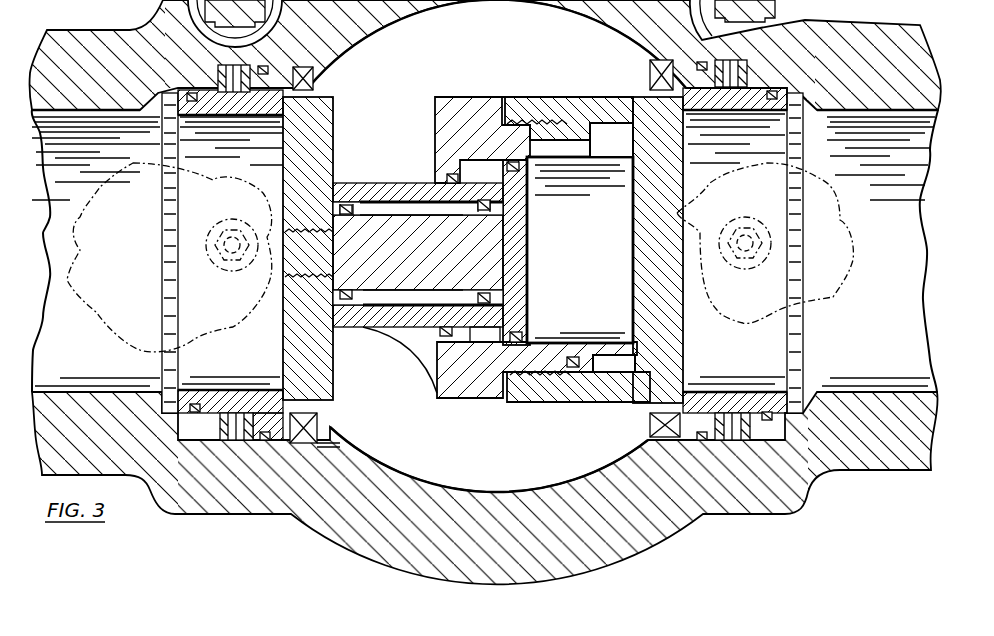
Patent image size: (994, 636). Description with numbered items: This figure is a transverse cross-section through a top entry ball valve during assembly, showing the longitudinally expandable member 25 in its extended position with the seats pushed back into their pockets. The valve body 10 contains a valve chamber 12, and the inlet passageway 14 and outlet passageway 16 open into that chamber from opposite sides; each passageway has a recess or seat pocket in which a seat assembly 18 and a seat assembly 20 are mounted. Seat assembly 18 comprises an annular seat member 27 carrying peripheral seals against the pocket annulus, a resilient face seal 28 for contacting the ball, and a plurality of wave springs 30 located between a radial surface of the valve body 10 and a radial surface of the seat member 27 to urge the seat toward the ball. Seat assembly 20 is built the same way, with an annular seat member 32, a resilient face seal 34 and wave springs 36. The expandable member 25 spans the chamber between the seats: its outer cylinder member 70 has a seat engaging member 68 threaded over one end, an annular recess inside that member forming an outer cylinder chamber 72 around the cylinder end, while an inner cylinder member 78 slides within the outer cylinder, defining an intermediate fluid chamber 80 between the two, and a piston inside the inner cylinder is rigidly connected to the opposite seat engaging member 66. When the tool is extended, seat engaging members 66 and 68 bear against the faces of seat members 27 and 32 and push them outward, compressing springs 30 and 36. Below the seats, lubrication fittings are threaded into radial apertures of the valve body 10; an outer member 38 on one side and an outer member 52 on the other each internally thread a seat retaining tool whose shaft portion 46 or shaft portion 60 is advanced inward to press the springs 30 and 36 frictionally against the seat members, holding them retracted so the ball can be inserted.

The valve body 10 is at (314, 520).
The valve chamber 12 is at (456, 466).
The inlet passageway 14 is at (88, 362).
The outlet passageway 16 is at (888, 354).
The seat assembly 18 is at (239, 352).
The seat assembly 20 is at (766, 376).
The longitudinally expandable member 25 is at (533, 76).
The annular seat member 27 is at (234, 117).
The resilient face seal 28 is at (322, 424).
The wave springs 30 is at (225, 445).
The annular seat member 32 is at (737, 111).
The resilient face seal 34 is at (604, 408).
The wave springs 36 is at (730, 442).
The outer member 38 is at (208, 235).
The shaft portion 46 is at (225, 247).
The outer member 52 is at (770, 252).
The shaft portion 60 is at (762, 238).
The seat engaging member 66 is at (302, 178).
The seat engaging member 68 is at (672, 316).
The outer cylinder member 70 is at (457, 113).
The outer cylinder chamber 72 is at (735, 105).
The inner cylinder member 78 is at (402, 190).
The intermediate fluid chamber 80 is at (520, 182).